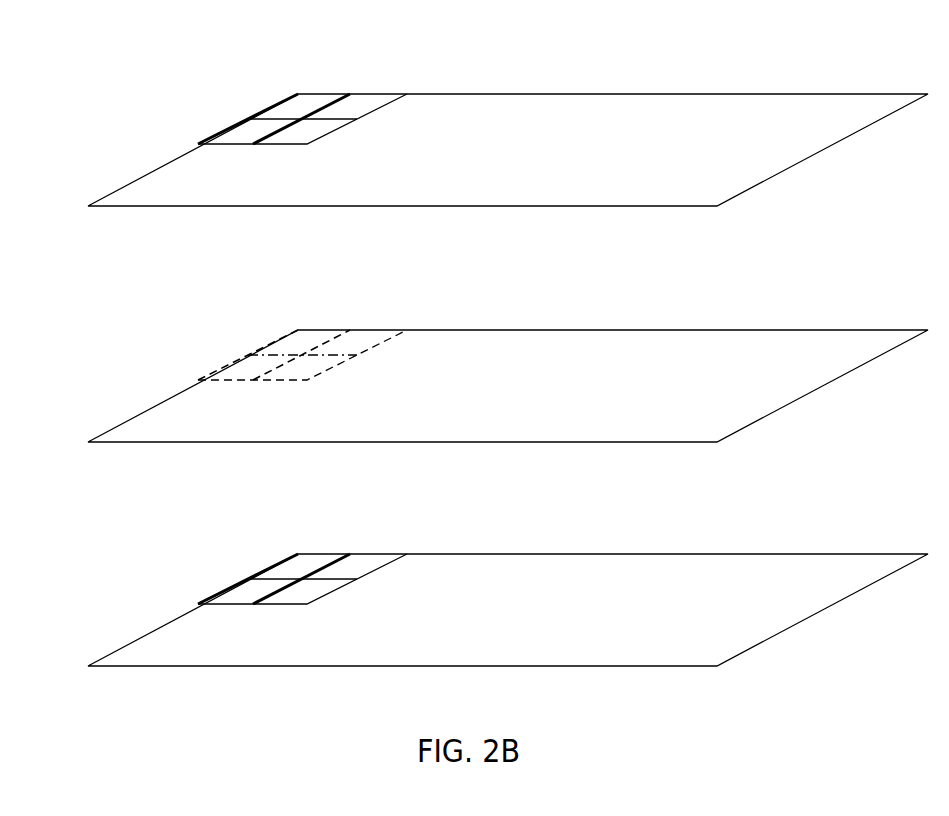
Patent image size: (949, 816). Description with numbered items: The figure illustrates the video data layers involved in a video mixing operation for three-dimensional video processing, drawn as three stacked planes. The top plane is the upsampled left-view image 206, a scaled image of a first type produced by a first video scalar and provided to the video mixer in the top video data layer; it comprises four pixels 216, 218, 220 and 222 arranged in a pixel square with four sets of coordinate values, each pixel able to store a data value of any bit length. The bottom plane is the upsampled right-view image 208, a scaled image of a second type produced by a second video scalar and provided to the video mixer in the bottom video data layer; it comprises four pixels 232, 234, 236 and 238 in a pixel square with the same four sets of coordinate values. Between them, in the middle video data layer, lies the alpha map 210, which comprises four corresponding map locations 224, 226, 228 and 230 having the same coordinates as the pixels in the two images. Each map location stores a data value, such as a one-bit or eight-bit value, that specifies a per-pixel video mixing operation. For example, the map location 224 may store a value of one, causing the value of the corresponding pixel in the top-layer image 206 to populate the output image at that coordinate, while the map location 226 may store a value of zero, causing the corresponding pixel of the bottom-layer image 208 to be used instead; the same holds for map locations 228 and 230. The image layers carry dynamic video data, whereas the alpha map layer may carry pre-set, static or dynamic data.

The upsampled left-view image 206 is at (538, 130).
The pixel 216 is at (288, 105).
The pixel 218 is at (352, 105).
The pixel 220 is at (263, 130).
The pixel 222 is at (314, 128).
The alpha map 210 is at (538, 366).
The map location 224 is at (288, 341).
The map location 226 is at (352, 341).
The map location 228 is at (263, 366).
The map location 230 is at (314, 364).
The upsampled right-view image 208 is at (538, 590).
The pixel 232 is at (288, 565).
The pixel 234 is at (352, 565).
The pixel 236 is at (263, 590).
The pixel 238 is at (314, 588).